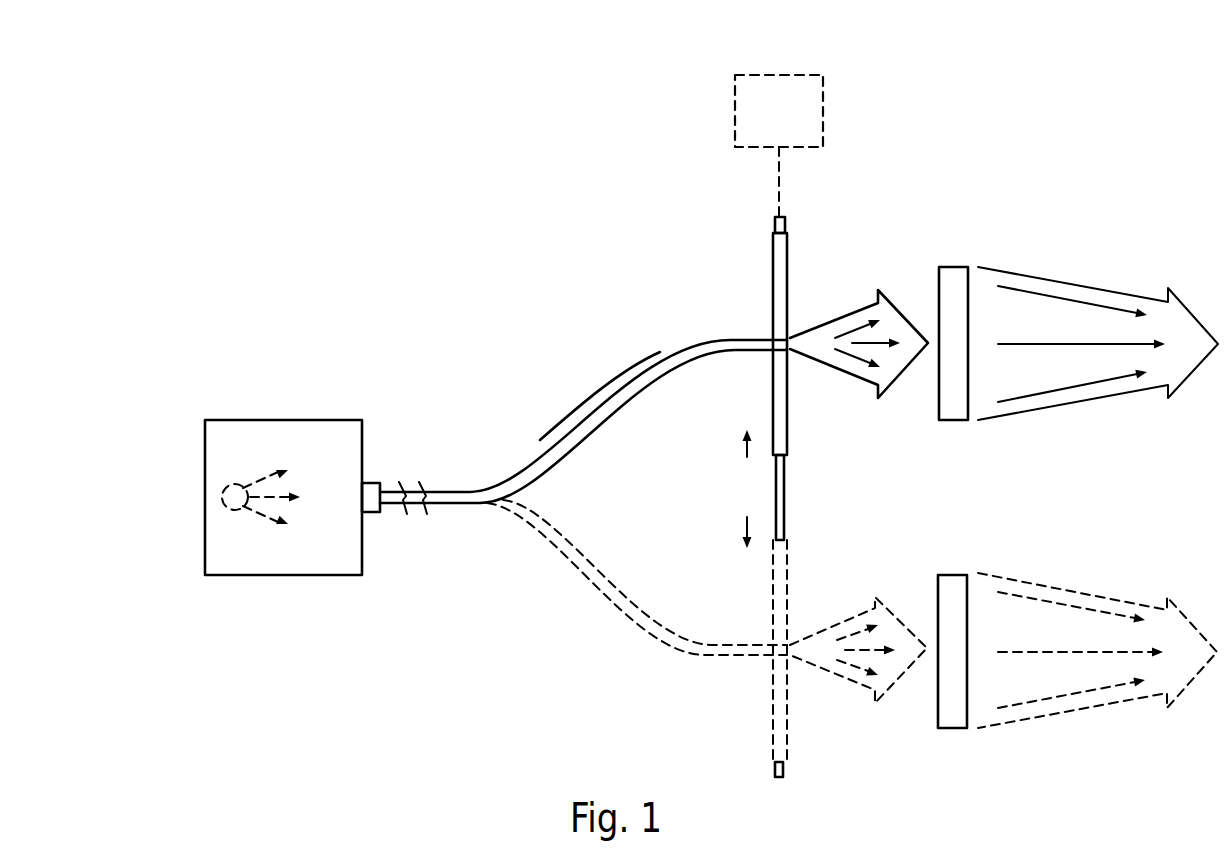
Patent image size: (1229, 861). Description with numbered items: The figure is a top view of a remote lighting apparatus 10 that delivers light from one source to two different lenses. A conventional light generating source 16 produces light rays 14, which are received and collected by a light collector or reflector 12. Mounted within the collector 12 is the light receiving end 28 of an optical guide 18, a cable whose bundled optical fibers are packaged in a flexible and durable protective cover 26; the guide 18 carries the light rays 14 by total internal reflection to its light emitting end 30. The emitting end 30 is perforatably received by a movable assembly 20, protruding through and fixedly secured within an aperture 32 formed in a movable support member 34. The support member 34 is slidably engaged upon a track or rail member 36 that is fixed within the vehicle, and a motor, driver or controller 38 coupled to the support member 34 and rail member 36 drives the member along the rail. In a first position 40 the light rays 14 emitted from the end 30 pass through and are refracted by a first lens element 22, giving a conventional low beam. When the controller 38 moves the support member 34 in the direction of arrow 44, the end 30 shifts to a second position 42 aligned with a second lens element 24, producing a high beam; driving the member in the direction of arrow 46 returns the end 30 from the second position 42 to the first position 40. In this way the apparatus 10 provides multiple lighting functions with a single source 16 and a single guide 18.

The remote lighting apparatus 10 is at (532, 222).
The light collector 12 is at (325, 420).
The light rays 14 is at (268, 512).
The light generating source 16 is at (222, 487).
The optical guide 18 is at (560, 442).
The movable assembly 20 is at (762, 248).
The lens element 22 is at (950, 267).
The lens element 24 is at (950, 575).
The protective cover 26 is at (567, 460).
The light receiving end 28 is at (390, 488).
The light emitting end 30 is at (790, 350).
The aperture 32 is at (772, 338).
The movable support member 34 is at (773, 390).
The rail member 36 is at (778, 778).
The motor/driver/controller 38 is at (765, 121).
The first position 40 is at (790, 338).
The second position 42 is at (790, 648).
The arrow 44 is at (742, 536).
The arrow 46 is at (742, 453).